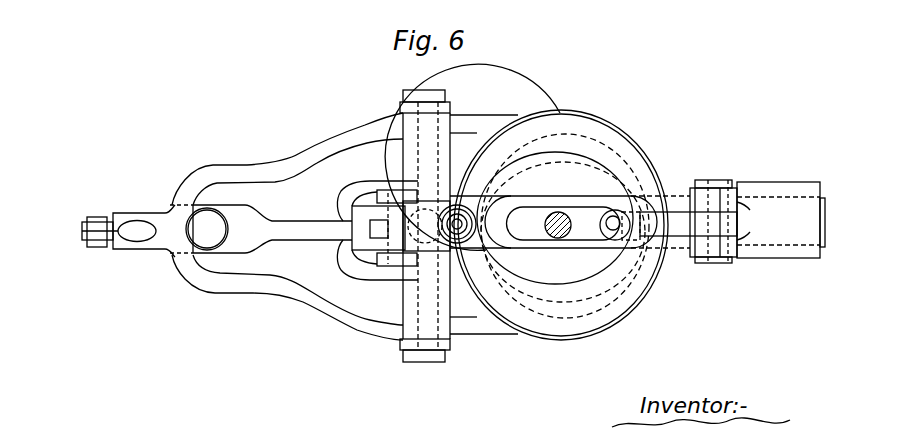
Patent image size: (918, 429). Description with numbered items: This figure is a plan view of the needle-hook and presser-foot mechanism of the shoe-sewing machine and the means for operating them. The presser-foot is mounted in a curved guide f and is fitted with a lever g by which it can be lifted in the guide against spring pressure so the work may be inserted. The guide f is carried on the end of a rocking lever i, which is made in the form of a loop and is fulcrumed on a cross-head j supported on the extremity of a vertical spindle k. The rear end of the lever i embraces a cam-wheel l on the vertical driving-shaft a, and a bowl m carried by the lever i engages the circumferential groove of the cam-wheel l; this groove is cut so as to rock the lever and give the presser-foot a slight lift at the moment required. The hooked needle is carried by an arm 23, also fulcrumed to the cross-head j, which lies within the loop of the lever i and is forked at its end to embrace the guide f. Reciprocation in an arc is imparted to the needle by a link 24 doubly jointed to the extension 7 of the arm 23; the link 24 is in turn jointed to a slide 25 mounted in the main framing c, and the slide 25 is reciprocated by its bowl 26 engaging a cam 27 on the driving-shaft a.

The curved guide f is at (130, 248).
The lever g is at (125, 220).
The extension 7 is at (320, 228).
The arm 23 is at (375, 235).
The rocking lever i is at (282, 170).
The cross-head j is at (434, 350).
The vertical spindle k is at (439, 226).
The cam-wheel l is at (598, 300).
The cam 27 is at (552, 253).
The vertical driving-shaft a is at (560, 212).
The bowl 26 is at (606, 226).
The bowl m is at (634, 236).
The link 24 is at (672, 196).
The main framing c is at (765, 256).
The slide 25 is at (778, 196).